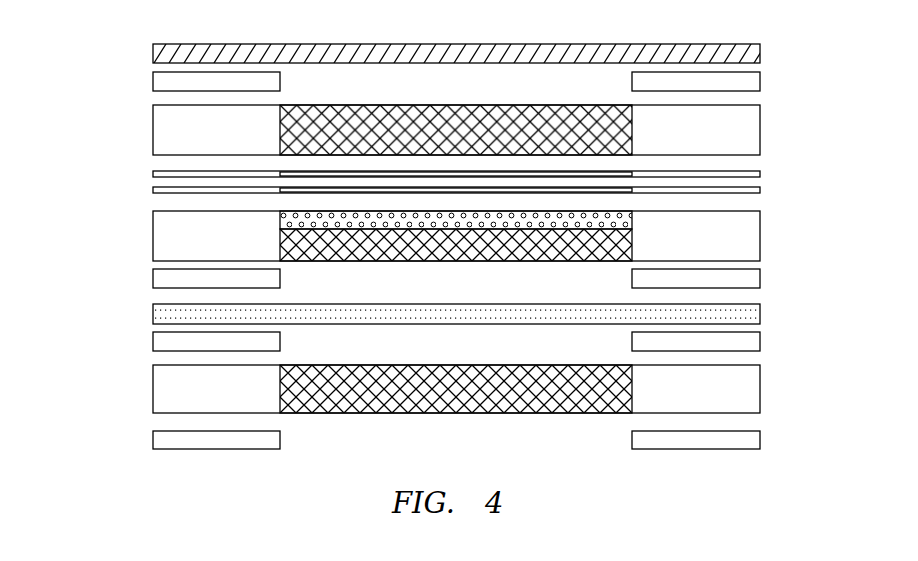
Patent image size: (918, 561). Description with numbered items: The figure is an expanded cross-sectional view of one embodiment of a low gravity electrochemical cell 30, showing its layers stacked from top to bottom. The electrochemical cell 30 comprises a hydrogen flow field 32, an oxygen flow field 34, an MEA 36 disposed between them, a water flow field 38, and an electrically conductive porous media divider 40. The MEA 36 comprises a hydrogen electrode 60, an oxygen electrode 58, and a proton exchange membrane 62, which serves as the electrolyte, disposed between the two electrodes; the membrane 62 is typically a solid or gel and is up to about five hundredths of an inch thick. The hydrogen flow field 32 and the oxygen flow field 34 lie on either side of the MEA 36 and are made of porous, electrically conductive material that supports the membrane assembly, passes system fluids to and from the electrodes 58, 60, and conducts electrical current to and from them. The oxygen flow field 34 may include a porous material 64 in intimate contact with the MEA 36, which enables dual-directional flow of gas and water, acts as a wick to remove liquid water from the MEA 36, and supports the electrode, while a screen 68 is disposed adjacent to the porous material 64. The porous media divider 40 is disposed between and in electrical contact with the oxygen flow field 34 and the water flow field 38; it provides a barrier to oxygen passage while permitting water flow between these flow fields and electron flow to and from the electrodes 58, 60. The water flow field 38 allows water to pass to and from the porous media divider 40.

The electrochemical cell 30 is at (83, 177).
The hydrogen flow field 32 is at (167, 127).
The oxygen flow field 34 is at (172, 232).
The MEA 36 is at (140, 167).
The water flow field 38 is at (163, 391).
The porous media divider 40 is at (153, 316).
The oxygen electrode 58 is at (632, 193).
The hydrogen electrode 60 is at (630, 171).
The proton exchange membrane 62 is at (758, 182).
The porous material 64 is at (632, 219).
The screen 68 is at (557, 248).